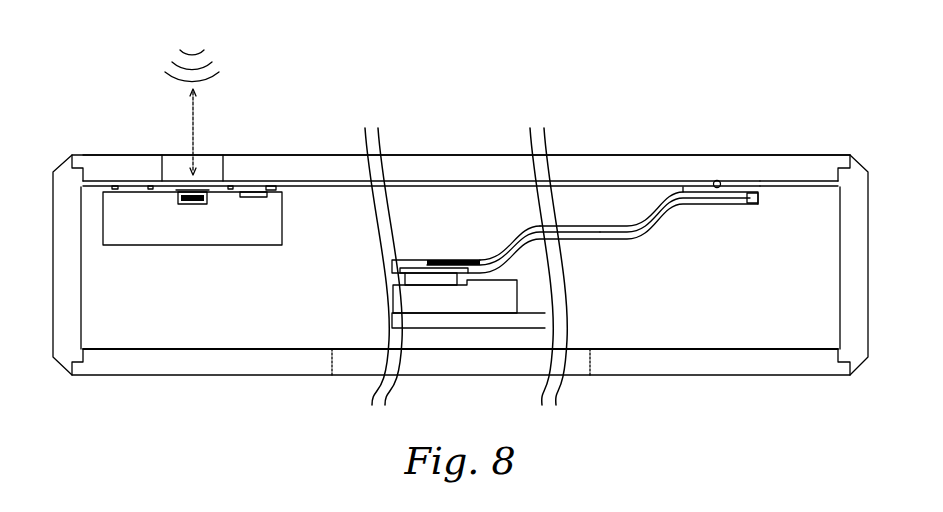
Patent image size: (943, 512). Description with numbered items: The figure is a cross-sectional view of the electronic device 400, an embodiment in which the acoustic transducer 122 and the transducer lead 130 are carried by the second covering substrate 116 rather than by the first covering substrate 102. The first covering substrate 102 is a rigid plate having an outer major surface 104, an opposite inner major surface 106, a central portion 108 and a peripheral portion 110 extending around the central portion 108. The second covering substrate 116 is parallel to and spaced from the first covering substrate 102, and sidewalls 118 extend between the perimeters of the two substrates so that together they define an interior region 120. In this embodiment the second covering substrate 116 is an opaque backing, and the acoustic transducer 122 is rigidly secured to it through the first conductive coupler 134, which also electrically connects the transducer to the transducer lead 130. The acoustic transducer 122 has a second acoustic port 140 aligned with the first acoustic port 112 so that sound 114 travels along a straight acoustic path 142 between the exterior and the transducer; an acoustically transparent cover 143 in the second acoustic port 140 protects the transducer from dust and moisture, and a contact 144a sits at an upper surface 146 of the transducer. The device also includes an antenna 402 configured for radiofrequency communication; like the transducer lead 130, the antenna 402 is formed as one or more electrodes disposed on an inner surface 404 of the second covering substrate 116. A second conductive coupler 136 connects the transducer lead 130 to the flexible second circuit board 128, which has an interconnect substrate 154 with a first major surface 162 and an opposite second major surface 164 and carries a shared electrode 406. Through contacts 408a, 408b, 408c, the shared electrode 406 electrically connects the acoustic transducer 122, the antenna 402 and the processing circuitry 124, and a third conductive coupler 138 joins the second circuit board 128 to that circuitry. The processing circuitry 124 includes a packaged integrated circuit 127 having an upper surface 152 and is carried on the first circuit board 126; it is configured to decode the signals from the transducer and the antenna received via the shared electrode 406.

The electronic device 400 is at (463, 243).
The outer major surface 104 is at (205, 380).
The second covering substrate 116 is at (332, 162).
The first acoustic port 112 is at (156, 166).
The transducer lead 130 is at (463, 183).
The antenna 402 is at (780, 181).
The inner surface 404 is at (802, 191).
The sidewalls 118 is at (70, 282).
The inner major surface 106 is at (201, 346).
The interior region 120 is at (778, 336).
The first covering substrate 102 is at (420, 318).
The peripheral portion 110 is at (288, 360).
The central portion 108 is at (338, 356).
The upper surface 146 is at (117, 181).
The first conductive coupler 134 is at (276, 190).
The acoustic transducer 122 is at (192, 218).
The second acoustic port 140 is at (190, 206).
The acoustically transparent cover 143 is at (187, 189).
The contact 144a is at (260, 194).
The acoustic path 142 is at (196, 130).
The sound 114 is at (192, 51).
The second conductive coupler 136 is at (715, 180).
The second circuit board 128 is at (625, 206).
The third conductive coupler 138 is at (390, 264).
The first major surface 162 is at (500, 236).
The upper surface 152 is at (508, 270).
The second major surface 164 is at (602, 246).
The shared electrode 406 is at (636, 230).
The contact 408a is at (727, 198).
The interconnect substrate 154 is at (757, 204).
The contact 408b is at (408, 267).
The contact 408c is at (404, 280).
The processing circuitry 124 is at (455, 344).
The packaged integrated circuit 127 is at (435, 300).
The first circuit board 126 is at (546, 326).